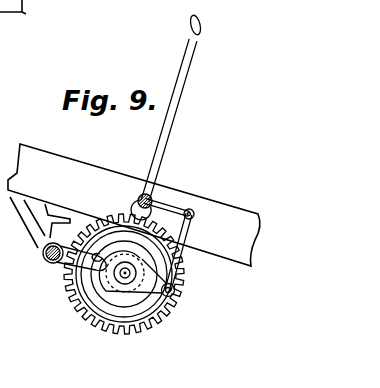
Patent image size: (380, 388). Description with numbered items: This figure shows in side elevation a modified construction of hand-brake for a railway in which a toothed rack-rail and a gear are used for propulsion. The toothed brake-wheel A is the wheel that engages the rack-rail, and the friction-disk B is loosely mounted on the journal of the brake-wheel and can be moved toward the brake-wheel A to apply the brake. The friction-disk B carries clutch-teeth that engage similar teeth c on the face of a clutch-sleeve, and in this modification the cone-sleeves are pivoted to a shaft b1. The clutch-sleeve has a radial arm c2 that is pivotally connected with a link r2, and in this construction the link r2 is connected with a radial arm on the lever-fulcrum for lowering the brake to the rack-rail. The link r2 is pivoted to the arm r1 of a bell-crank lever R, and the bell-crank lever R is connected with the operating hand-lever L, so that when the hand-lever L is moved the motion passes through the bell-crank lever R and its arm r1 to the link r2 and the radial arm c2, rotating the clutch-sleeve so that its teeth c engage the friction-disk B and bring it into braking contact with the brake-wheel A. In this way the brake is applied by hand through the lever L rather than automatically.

The hand-lever L is at (151, 144).
The bell-crank lever R is at (137, 199).
The arm of bell-crank lever r1 is at (165, 206).
The link r2 is at (186, 248).
The radial arm of clutch-sleeve c2 is at (177, 289).
The brake-wheel A is at (168, 311).
The friction-disk B is at (100, 292).
The shaft b1 is at (48, 260).
The clutch-teeth c is at (103, 266).